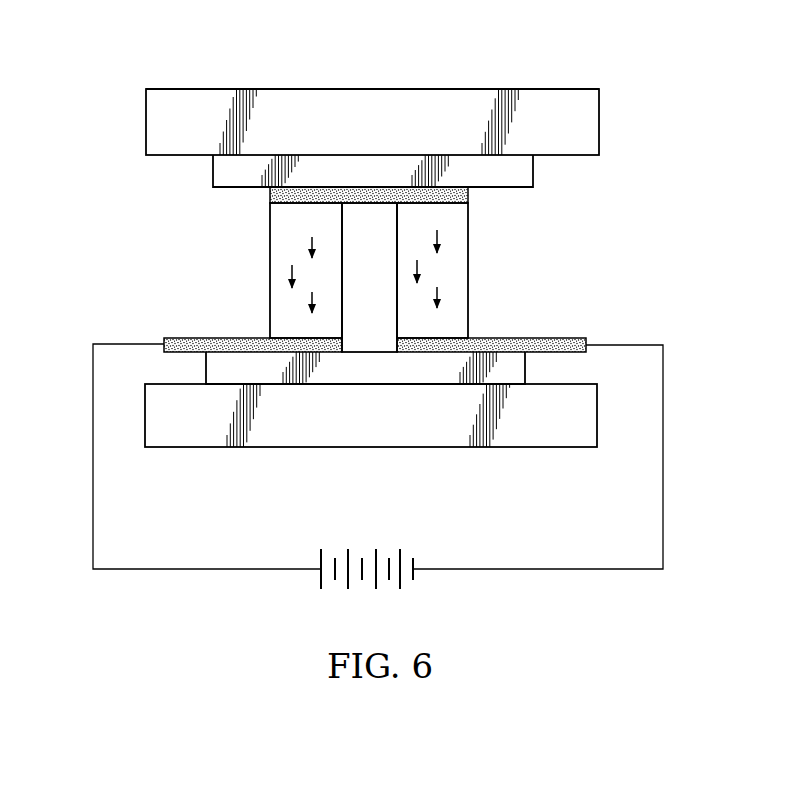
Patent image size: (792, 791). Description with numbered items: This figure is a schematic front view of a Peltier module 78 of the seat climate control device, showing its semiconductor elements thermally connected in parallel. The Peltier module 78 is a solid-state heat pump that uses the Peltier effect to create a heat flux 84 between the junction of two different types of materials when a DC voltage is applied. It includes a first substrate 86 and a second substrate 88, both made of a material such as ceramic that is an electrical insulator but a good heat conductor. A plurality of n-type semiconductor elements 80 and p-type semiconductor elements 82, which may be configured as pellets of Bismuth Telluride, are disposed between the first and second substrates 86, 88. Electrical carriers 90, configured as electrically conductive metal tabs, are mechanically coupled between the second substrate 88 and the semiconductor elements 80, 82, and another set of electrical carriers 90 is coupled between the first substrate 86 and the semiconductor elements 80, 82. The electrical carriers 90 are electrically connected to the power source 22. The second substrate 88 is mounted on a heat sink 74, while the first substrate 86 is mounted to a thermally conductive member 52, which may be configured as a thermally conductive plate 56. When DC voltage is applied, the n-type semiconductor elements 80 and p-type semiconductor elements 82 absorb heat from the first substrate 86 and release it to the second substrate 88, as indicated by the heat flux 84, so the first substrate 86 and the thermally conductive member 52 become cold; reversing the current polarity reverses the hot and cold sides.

The power source 22 is at (402, 552).
The thermally conductive member 52 is at (218, 89).
The thermally conductive plate 56 is at (373, 89).
The heat sink 74 is at (512, 447).
The Peltier module 78 is at (598, 185).
The n-type semiconductor element 80 is at (270, 270).
The p-type semiconductor element 82 is at (468, 270).
The heat flux 84 is at (417, 263).
The first substrate 86 is at (533, 168).
The second substrate 88 is at (224, 367).
The electrical carrier 90 is at (369, 196).